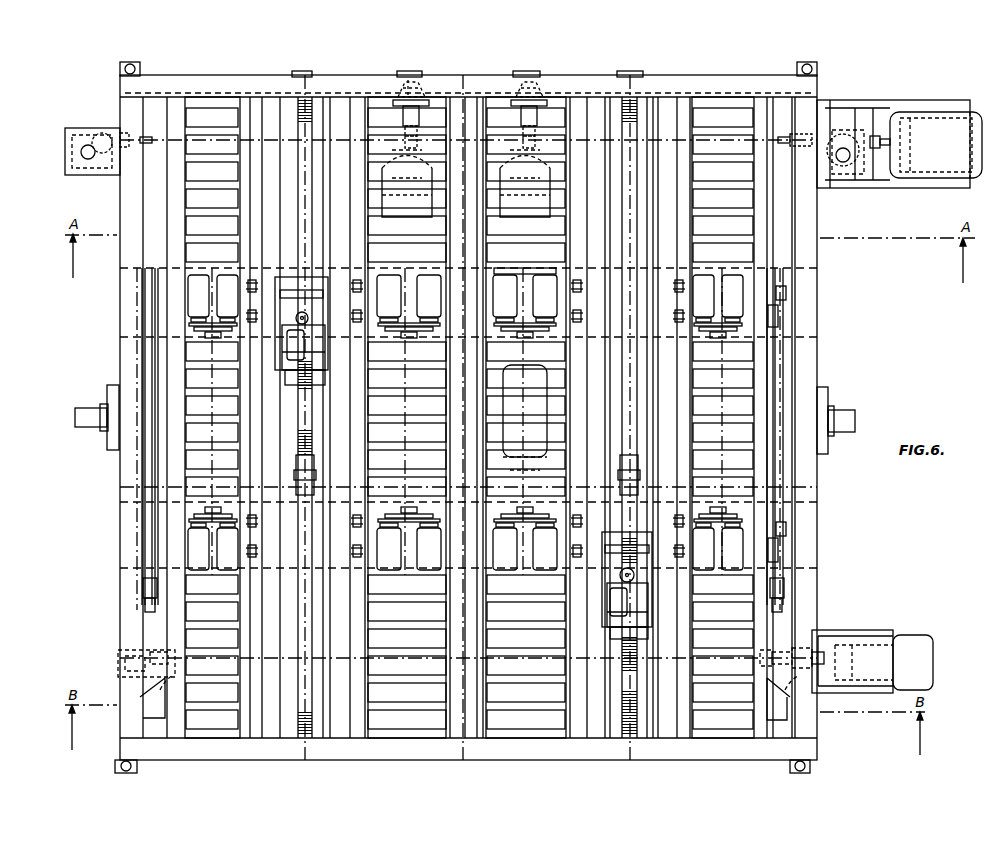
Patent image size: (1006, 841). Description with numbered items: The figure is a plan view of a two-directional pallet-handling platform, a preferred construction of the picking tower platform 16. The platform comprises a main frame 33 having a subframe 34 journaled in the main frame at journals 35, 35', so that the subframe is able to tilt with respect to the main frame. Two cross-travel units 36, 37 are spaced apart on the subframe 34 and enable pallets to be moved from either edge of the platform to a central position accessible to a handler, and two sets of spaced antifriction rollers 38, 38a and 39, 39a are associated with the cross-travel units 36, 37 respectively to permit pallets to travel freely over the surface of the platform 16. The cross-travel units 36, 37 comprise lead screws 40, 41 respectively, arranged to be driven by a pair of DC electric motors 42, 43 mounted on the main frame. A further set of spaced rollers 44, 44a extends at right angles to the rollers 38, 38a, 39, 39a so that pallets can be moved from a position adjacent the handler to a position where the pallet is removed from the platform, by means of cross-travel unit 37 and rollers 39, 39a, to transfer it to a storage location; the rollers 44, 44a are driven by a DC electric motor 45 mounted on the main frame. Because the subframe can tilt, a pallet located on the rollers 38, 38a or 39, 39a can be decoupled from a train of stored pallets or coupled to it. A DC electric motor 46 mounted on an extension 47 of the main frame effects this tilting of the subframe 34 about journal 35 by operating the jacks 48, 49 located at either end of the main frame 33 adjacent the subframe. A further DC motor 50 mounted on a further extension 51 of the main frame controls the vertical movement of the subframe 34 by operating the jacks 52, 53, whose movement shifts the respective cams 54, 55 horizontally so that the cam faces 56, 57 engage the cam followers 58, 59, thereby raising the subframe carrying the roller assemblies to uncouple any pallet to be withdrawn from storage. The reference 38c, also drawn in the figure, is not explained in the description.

The picking tower platform 16 is at (822, 366).
The main frame 33 is at (172, 258).
The subframe 34 is at (146, 334).
The journal 35 is at (97, 417).
The journal 35' is at (839, 420).
The cross-travel unit 36 is at (288, 306).
The cross-travel unit 37 is at (612, 551).
The antifriction roller 38 is at (188, 192).
The antifriction roller 38a is at (386, 348).
The spindle head 38c is at (424, 108).
The antifriction roller 39 is at (556, 384).
The antifriction roller 39a is at (712, 350).
The lead screw 40 is at (300, 471).
The lead screw 41 is at (630, 475).
The DC electric motor 42 is at (386, 190).
The DC electric motor 43 is at (552, 187).
The roller 44 is at (509, 278).
The roller 44a is at (393, 550).
The DC electric motor 45 is at (540, 393).
The DC electric motor 46 is at (926, 122).
The extension 47 is at (886, 188).
The jack 48 is at (92, 143).
The jack 49 is at (840, 150).
The DC motor 50 is at (913, 648).
The extension 51 is at (834, 642).
The jack 52 is at (152, 637).
The jack 53 is at (782, 640).
The cam 54 is at (148, 463).
The cam 55 is at (782, 494).
The cam face 56 is at (778, 330).
The cam face 57 is at (778, 564).
The cam follower 58 is at (786, 302).
The cam follower 59 is at (786, 534).